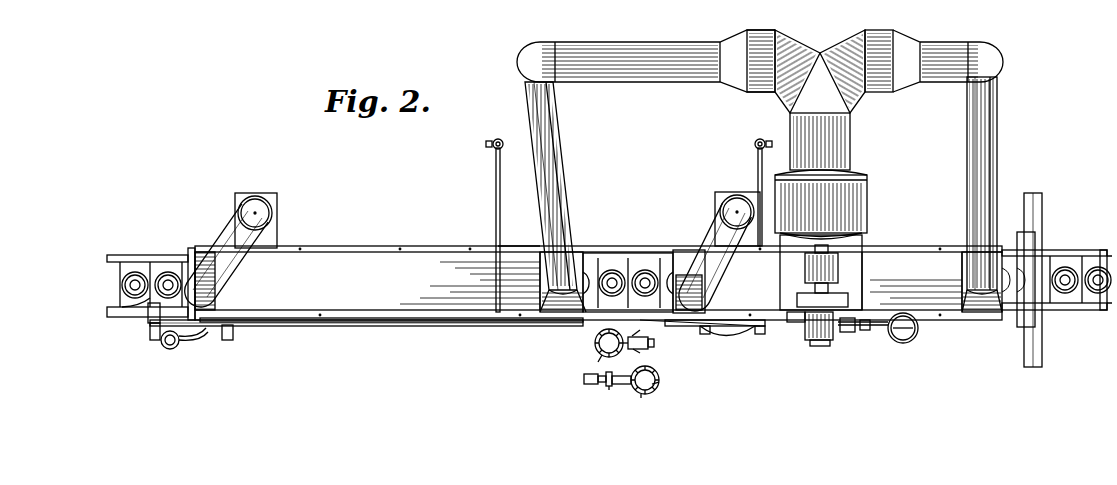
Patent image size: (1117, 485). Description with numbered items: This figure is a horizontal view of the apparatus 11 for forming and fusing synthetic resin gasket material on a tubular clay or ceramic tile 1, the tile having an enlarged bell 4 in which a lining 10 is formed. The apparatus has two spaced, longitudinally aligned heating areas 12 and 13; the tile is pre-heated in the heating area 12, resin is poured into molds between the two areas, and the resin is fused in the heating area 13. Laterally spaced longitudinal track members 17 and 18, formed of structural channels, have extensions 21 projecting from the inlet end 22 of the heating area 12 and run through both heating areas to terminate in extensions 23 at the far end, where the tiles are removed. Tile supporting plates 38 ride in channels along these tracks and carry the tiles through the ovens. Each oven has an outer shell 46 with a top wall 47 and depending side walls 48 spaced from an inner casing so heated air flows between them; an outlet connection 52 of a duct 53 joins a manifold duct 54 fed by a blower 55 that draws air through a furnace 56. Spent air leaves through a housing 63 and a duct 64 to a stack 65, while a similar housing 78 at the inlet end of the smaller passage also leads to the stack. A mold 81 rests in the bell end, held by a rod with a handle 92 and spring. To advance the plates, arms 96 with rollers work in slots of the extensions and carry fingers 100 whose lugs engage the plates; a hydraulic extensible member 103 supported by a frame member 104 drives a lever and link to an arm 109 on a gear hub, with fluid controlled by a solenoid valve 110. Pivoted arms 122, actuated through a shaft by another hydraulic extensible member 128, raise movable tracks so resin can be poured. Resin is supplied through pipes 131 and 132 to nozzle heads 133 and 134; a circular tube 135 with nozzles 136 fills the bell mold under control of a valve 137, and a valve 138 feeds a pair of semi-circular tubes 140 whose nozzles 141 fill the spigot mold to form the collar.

The tubular clay or ceramic tile 1 is at (122, 285).
The enlarged bell 4 is at (1072, 268).
The lining 10 is at (1068, 293).
The apparatus 11 is at (290, 246).
The heating area 12 is at (388, 268).
The heating area 13 is at (900, 262).
The longitudinal track member 17 is at (135, 255).
The longitudinal track member 18 is at (128, 316).
The extensions 21 is at (112, 312).
The inlet end 22 is at (192, 248).
The extensions 23 is at (1100, 310).
The tile supporting plates 38 is at (622, 264).
The outer shell 46 is at (433, 300).
The top wall 47 is at (455, 258).
The side walls 48 is at (520, 248).
The outlet connection 52 is at (556, 312).
The duct 53 is at (562, 176).
The manifold duct 54 is at (660, 84).
The blower 55 is at (868, 180).
The furnace 56 is at (850, 308).
The housing 63 is at (215, 300).
The duct 64 is at (238, 262).
The stack 65 is at (272, 207).
The housing 78 is at (238, 200).
The mold 81 is at (122, 281).
The handle 92 is at (120, 298).
The arms 96 is at (156, 340).
The fingers 100 is at (152, 323).
The hydraulic extensible member 103 is at (190, 348).
The frame member 104 is at (170, 349).
The arm 109 is at (228, 340).
The valve 110 is at (232, 316).
The arms 122 is at (690, 332).
The hydraulic extensible member 128 is at (712, 333).
The pipe 131 is at (650, 350).
The pipe 132 is at (590, 384).
The nozzle head 133 is at (598, 362).
The nozzle head 134 is at (657, 388).
The tube 135 is at (595, 343).
The nozzles 136 is at (646, 354).
The valve 137 is at (637, 326).
The valve 138 is at (609, 390).
The tubes 140 is at (645, 394).
The nozzles 141 is at (659, 382).